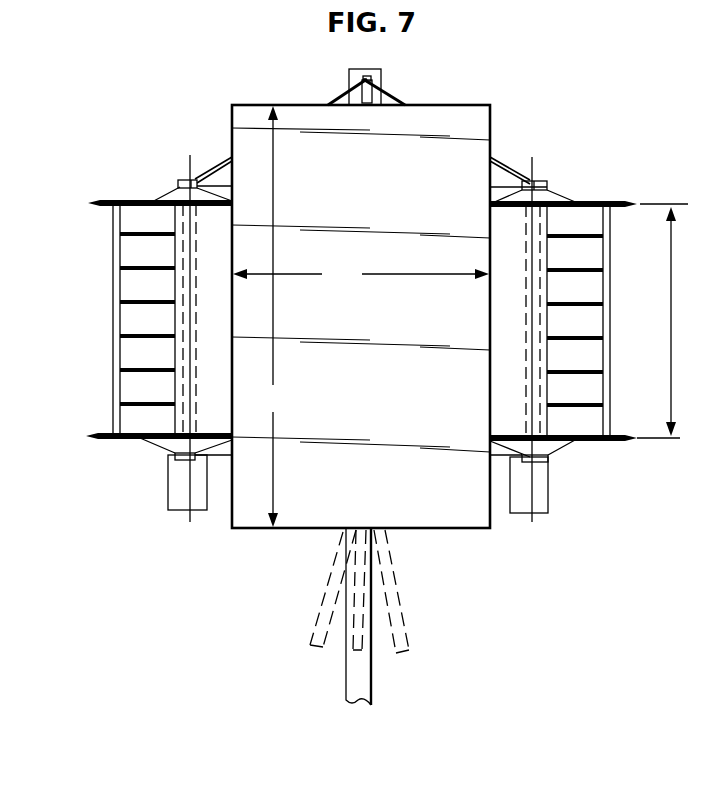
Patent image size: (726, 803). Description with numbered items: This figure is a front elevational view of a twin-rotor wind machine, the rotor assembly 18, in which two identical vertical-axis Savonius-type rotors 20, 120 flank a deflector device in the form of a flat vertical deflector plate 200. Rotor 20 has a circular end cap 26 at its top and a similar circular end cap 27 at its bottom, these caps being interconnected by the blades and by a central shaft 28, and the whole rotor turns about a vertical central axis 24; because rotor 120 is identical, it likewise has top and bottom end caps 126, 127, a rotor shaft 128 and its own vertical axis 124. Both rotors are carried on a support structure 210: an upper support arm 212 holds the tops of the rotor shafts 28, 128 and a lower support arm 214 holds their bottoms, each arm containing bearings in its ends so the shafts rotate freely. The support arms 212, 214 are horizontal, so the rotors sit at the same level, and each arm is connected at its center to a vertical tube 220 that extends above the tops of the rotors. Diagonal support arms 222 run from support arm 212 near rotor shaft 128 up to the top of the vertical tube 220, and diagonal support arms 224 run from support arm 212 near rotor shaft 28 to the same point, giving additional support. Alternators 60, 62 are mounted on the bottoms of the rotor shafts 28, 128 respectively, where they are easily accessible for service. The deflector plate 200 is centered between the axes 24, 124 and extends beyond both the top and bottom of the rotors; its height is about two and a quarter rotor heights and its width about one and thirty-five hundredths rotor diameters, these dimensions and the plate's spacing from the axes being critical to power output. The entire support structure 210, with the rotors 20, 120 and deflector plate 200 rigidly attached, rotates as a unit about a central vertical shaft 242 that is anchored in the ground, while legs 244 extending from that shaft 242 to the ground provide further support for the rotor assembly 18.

The rotor assembly 18 is at (160, 32).
The Savonius-type rotor 20 is at (108, 266).
The vertical central axis 24 is at (190, 163).
The circular end cap 26 is at (104, 200).
The circular end cap 27 is at (97, 436).
The central shaft 28 is at (178, 184).
The alternator 60 is at (168, 495).
The alternator 62 is at (548, 498).
The Savonius-type rotor 120 is at (616, 405).
The vertical axis 124 is at (540, 168).
The right upper support bar 126 is at (618, 203).
The right lower support bar 127 is at (627, 440).
The rotor shaft 128 is at (547, 184).
The deflector plate 200 is at (490, 112).
The support structure 210 is at (500, 172).
The support arm 212 is at (514, 185).
The support arm 214 is at (491, 468).
The vertical tube 220 is at (381, 70).
The diagonal support arms 222 is at (397, 100).
The diagonal support arms 224 is at (338, 102).
The central vertical shaft 242 is at (357, 683).
The legs 244 is at (327, 588).